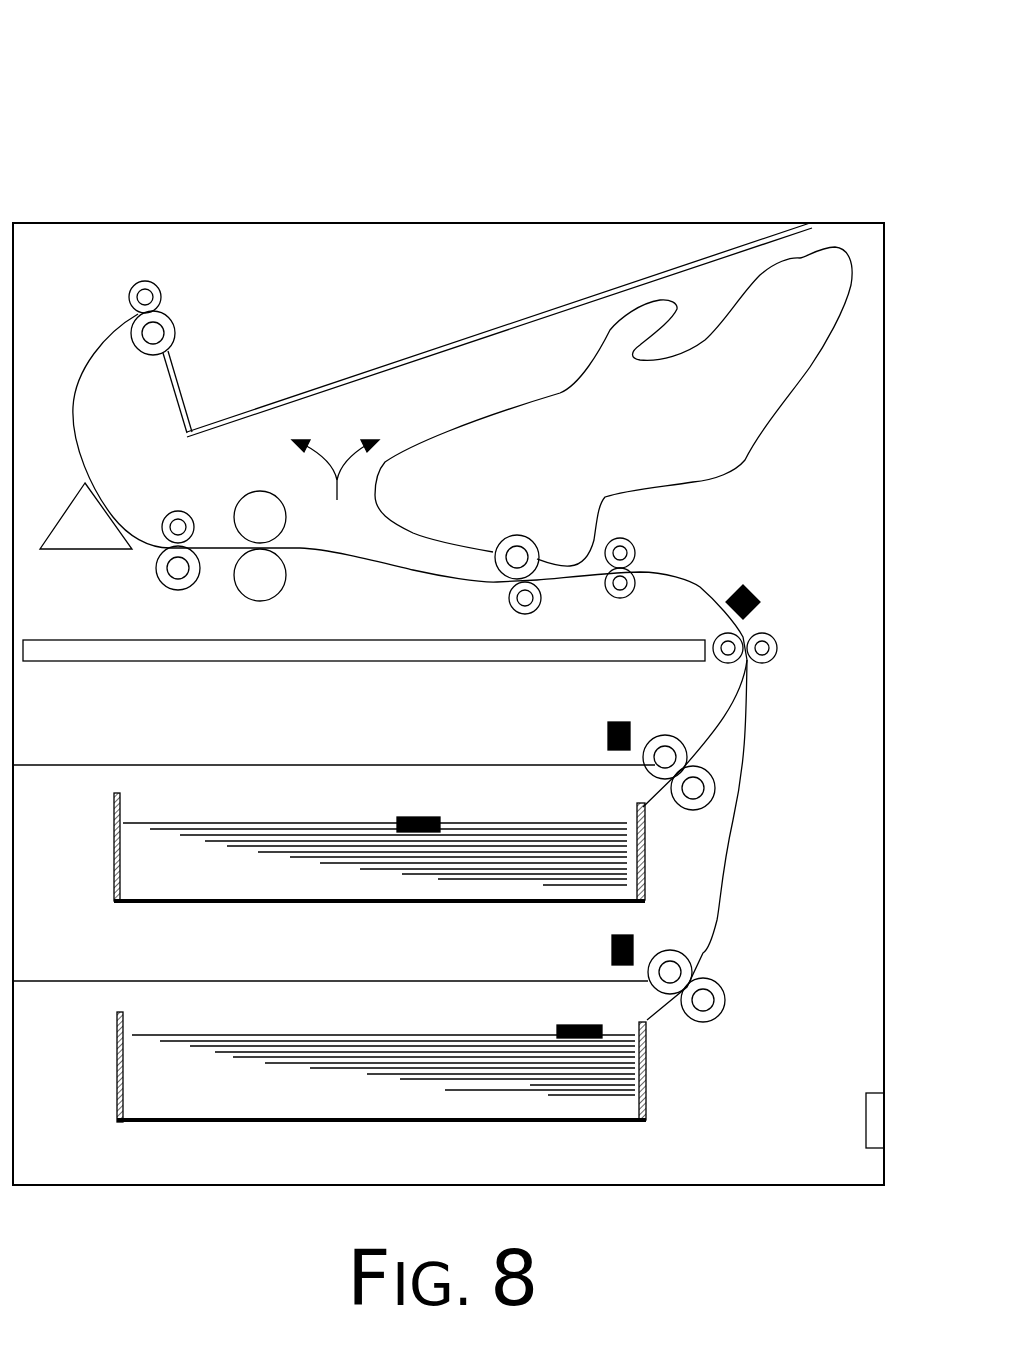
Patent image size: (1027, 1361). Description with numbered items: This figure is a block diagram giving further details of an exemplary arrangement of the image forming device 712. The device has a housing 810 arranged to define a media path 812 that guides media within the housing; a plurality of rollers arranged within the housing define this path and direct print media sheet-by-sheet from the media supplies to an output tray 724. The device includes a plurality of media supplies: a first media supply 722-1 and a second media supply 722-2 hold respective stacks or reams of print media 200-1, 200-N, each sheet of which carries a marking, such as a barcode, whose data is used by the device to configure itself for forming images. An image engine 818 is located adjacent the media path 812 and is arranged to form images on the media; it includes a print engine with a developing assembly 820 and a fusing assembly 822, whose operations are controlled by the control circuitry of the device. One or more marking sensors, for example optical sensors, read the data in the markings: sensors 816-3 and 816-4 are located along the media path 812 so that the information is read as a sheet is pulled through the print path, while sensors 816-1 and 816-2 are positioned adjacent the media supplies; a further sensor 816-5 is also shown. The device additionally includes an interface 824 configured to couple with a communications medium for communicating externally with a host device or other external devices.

The image forming device 712 is at (114, 44).
The housing 810 is at (711, 226).
The output tray 724 is at (497, 325).
The fusing assembly 822 is at (240, 500).
The image engine 818 is at (335, 489).
The developing assembly 820 is at (742, 464).
The media path 812 is at (340, 557).
The marking sensor 816-4 is at (751, 583).
The marking sensor 816-3 is at (607, 728).
The marking sensor 816-5 is at (612, 948).
The marking sensor 816-1 is at (413, 832).
The marking sensor 816-2 is at (573, 1038).
The print media 200-1 is at (348, 825).
The print media 200-N is at (365, 1033).
The first media supply 722-1 is at (145, 912).
The second media supply 722-2 is at (153, 1128).
The interface 824 is at (870, 1122).